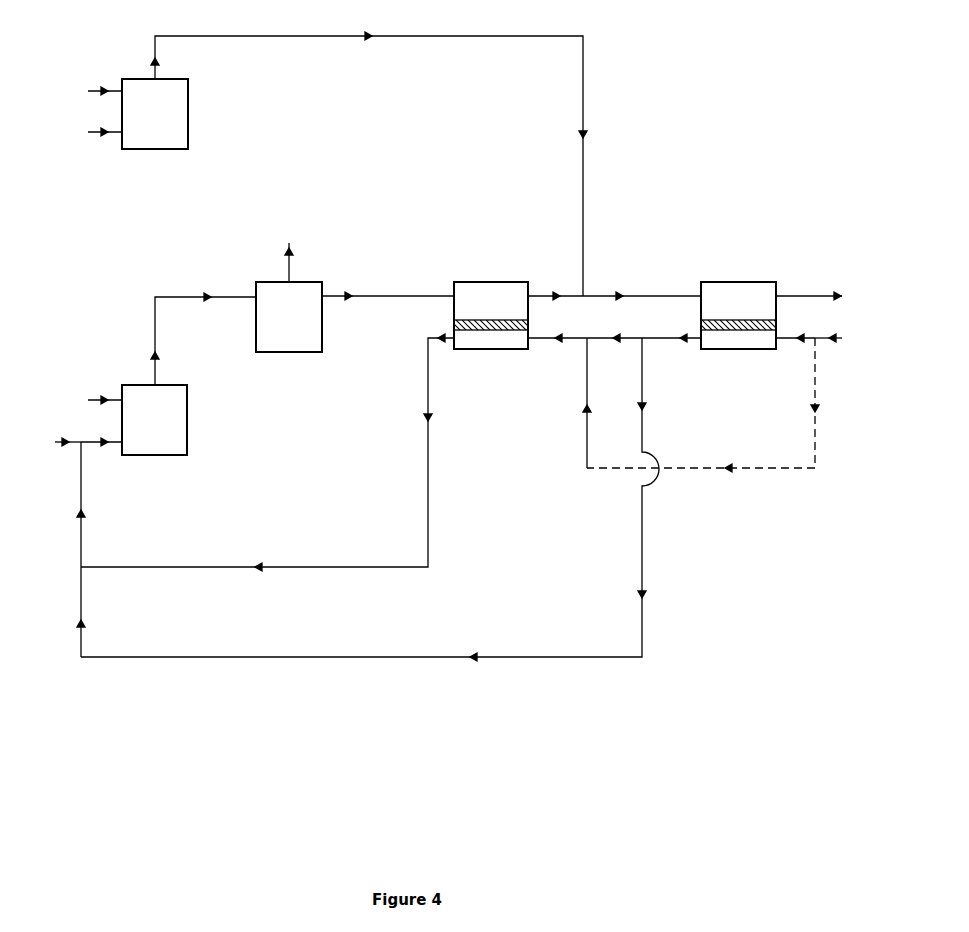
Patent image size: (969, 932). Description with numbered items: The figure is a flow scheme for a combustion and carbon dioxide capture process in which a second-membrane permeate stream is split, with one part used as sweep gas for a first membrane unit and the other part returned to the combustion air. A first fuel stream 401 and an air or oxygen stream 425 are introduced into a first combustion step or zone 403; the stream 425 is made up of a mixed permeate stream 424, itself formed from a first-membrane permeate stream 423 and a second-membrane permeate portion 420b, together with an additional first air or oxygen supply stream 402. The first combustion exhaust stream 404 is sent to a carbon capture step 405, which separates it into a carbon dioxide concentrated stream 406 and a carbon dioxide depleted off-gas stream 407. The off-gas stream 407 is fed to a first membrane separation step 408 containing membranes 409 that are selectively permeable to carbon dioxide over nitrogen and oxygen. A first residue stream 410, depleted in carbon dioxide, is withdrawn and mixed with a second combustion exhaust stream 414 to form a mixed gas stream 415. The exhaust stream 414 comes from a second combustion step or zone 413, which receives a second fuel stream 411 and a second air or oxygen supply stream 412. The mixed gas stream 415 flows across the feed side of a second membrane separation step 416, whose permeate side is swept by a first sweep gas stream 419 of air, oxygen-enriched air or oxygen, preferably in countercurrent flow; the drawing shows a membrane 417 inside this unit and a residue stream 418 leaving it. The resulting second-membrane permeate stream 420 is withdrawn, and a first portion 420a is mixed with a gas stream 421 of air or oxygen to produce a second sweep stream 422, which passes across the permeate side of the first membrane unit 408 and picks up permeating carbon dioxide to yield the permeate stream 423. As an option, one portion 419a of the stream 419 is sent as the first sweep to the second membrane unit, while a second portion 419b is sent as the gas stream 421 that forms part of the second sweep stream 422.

The first fuel stream 401 is at (88, 401).
The first air or oxygen supply stream 402 is at (50, 443).
The first combustion step or zone 403 is at (187, 425).
The first combustion exhaust stream 404 is at (203, 331).
The carbon capture step 405 is at (292, 352).
The carbon dioxide concentrated stream 406 is at (287, 254).
The carbon dioxide depleted off-gas stream 407 is at (388, 288).
The first membrane separation step 408 is at (502, 282).
The membranes 409 is at (452, 326).
The first residue stream 410 is at (555, 288).
The second fuel stream 411 is at (88, 92).
The second air or oxygen supply stream 412 is at (88, 133).
The second combustion step or zone 413 is at (188, 118).
The second combustion exhaust stream 414 is at (369, 155).
The mixed gas stream 415 is at (642, 288).
The second membrane separation step 416 is at (749, 282).
The second membrane 417 is at (700, 326).
The second retentate stream 418 is at (826, 296).
The first sweep gas stream 419 is at (845, 338).
The first portion of stream 419 419a is at (797, 328).
The second portion of stream 419 419b is at (703, 417).
The second-membrane permeate stream 420 is at (671, 348).
The first portion of permeate stream 420 420a is at (623, 447).
The second portion of permeate stream 420 420b is at (363, 610).
The gas stream 421 is at (571, 403).
The second sweep stream 422 is at (557, 348).
The first-membrane permeate stream 423 is at (267, 452).
The mixed permeate stream 424 is at (65, 549).
The air or oxygen feed 425 is at (101, 434).